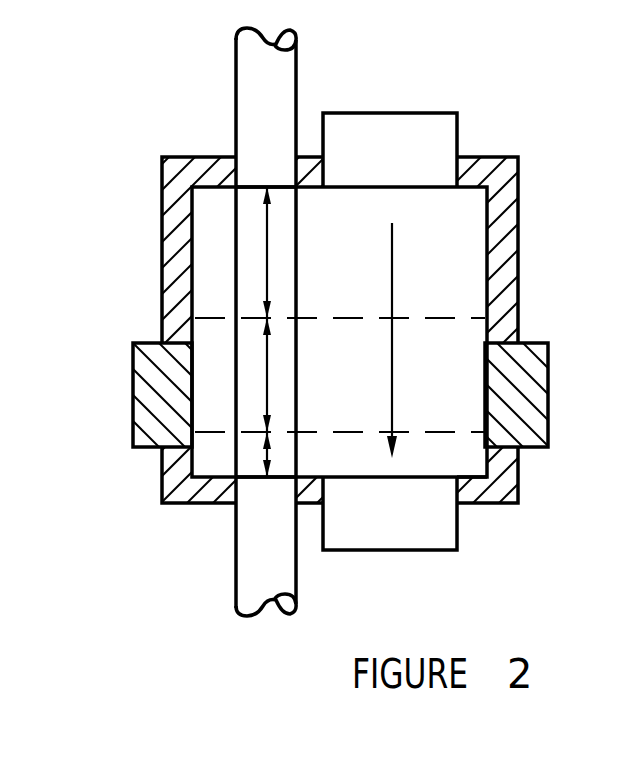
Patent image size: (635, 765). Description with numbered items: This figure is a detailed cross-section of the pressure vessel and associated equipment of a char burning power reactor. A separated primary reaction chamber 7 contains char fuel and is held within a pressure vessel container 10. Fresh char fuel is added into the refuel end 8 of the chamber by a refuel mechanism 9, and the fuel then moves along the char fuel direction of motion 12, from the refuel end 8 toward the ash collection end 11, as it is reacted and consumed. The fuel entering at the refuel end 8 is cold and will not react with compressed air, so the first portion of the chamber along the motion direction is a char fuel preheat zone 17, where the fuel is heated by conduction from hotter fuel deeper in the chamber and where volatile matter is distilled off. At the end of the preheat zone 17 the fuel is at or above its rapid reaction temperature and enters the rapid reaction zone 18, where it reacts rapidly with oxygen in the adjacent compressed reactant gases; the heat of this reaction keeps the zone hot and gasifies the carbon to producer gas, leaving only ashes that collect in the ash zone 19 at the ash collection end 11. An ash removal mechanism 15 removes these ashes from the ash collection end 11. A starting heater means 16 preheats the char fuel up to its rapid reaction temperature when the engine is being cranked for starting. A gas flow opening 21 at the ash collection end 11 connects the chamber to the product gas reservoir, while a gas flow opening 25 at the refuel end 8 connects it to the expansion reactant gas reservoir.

The primary reaction chamber 7 is at (302, 267).
The refuel end 8 is at (452, 218).
The refuel mechanism 9 is at (410, 135).
The pressure vessel container 10 is at (495, 275).
The ash collection end 11 is at (442, 453).
The char fuel direction of motion 12 is at (395, 357).
The ash removal mechanism 15 is at (417, 528).
The starting heater means 16 is at (508, 400).
The char fuel preheat zone 17 is at (268, 270).
The rapid reaction zone 18 is at (267, 370).
The ash zone 19 is at (263, 452).
The gas flow opening 21 is at (277, 478).
The gas flow opening 25 is at (282, 187).